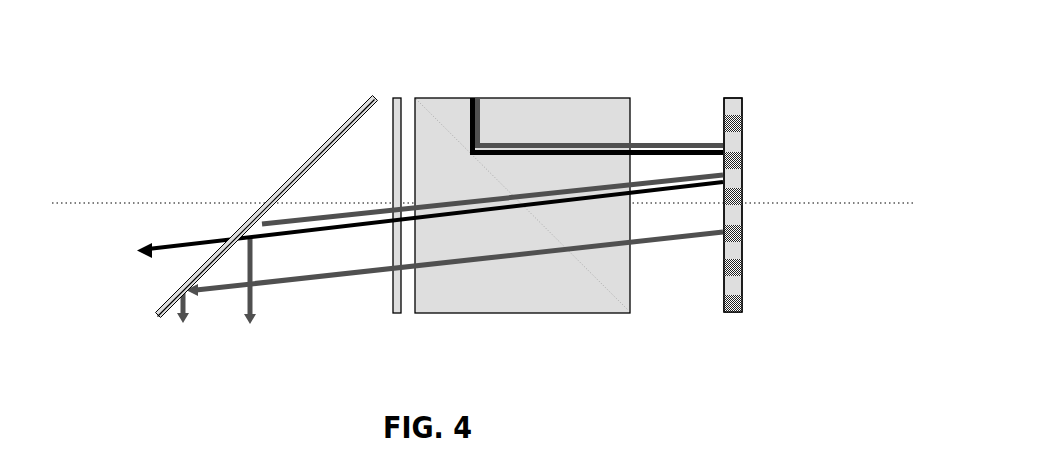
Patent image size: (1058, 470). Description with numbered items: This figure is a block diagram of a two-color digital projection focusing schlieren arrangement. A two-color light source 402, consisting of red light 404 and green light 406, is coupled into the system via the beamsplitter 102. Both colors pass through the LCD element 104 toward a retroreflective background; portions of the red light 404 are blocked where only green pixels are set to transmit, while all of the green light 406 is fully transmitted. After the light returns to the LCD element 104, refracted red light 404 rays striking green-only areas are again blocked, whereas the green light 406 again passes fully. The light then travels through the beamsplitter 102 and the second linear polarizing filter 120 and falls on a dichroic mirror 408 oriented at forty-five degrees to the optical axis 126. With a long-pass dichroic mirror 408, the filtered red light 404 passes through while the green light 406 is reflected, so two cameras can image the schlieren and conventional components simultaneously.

The beamsplitter 102 is at (557, 98).
The LCD element 104 is at (742, 312).
The second linear polarizing filter 120 is at (397, 98).
The optical axis 126 is at (70, 200).
The two-color light source 402 is at (474, 84).
The red light 404 is at (175, 247).
The green light 406 is at (375, 217).
The dichroic mirror 408 is at (358, 112).